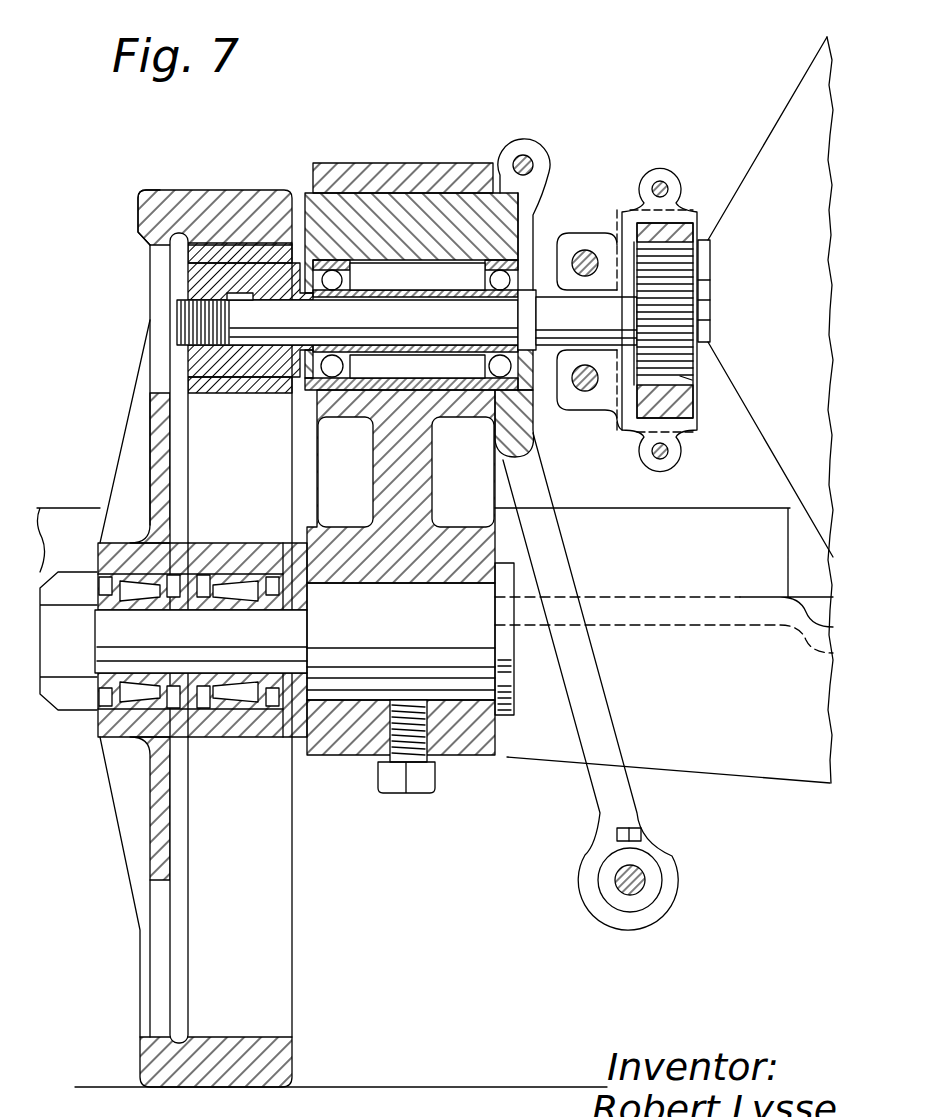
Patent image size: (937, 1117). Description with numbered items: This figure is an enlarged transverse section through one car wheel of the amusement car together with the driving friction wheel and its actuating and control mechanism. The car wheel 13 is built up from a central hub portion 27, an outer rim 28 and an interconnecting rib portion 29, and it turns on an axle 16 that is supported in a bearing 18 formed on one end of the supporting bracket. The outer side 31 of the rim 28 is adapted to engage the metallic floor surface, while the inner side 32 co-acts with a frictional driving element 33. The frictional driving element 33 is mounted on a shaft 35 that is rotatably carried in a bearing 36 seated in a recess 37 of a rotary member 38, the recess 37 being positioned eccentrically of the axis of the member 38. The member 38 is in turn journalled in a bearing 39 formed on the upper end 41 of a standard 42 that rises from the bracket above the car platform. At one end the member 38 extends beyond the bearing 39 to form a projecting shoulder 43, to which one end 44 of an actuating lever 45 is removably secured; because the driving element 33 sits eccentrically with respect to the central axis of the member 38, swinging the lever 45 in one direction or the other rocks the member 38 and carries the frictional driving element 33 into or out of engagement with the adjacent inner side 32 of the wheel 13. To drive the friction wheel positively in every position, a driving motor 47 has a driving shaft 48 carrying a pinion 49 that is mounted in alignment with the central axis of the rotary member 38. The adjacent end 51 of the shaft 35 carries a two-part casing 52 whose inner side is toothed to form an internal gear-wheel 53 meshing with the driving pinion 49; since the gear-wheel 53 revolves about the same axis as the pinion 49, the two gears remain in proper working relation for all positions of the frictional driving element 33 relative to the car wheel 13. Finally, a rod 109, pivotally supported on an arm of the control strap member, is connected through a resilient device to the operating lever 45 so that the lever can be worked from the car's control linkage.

The car wheel 13 is at (225, 1084).
The axle 16 is at (201, 641).
The bearing 18 is at (352, 746).
The central hub portion 27 is at (196, 543).
The outer rim 28 is at (199, 198).
The interconnecting rib portion 29 is at (165, 446).
The outer side of rim 31 is at (162, 190).
The inner side of rim 32 is at (216, 232).
The frictional driving element 33 is at (242, 262).
The shaft 35 is at (356, 320).
The bearing 36 is at (455, 295).
The recess 37 is at (417, 320).
The rotary member 38 is at (456, 202).
The bearing 39 is at (447, 167).
The upper end of standard 41 is at (387, 416).
The standard 42 is at (418, 495).
The projecting shoulder 43 is at (529, 152).
The end of actuating lever 44 is at (545, 157).
The actuating lever 45 is at (590, 668).
The driving motor 47 is at (770, 150).
The driving shaft 48 is at (695, 279).
The pinion 49 is at (711, 299).
The end of shaft 51 is at (586, 321).
The two-part casing 52 is at (662, 170).
The internal gear-wheel 53 is at (684, 378).
The rod 109 is at (645, 877).